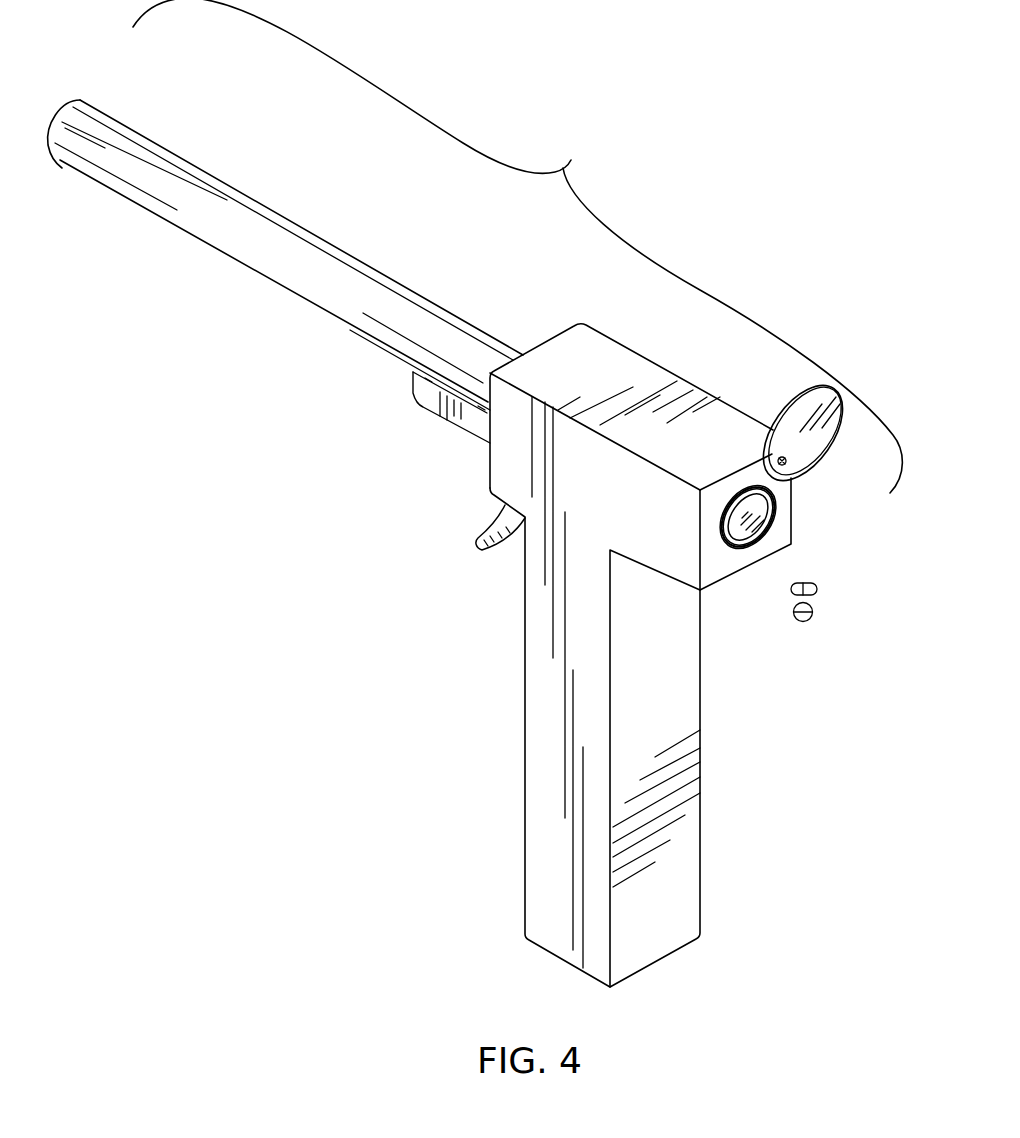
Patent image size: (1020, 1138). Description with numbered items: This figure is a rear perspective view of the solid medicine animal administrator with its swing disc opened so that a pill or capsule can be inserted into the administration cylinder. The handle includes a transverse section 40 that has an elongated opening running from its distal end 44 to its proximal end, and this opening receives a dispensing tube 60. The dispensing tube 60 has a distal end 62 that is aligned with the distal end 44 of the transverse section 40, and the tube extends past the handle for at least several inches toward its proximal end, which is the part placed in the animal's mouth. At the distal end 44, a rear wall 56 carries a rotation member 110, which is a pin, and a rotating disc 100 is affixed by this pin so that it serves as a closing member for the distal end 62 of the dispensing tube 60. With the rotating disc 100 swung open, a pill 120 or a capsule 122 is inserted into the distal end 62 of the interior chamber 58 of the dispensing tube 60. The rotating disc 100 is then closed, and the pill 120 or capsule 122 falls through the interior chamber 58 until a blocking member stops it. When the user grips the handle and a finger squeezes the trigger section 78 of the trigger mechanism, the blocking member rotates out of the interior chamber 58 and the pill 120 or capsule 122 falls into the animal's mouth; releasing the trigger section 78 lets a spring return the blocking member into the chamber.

The transverse section 40 is at (697, 590).
The distal end 44 is at (772, 512).
The rear wall 56 is at (778, 537).
The interior chamber 58 is at (735, 523).
The dispensing tube 60 is at (75, 111).
The distal end 62 is at (772, 503).
The trigger section 78 is at (478, 552).
The rotating disc 100 is at (830, 423).
The rotation member 110 is at (780, 457).
The pill 120 is at (812, 619).
The capsule 122 is at (817, 590).